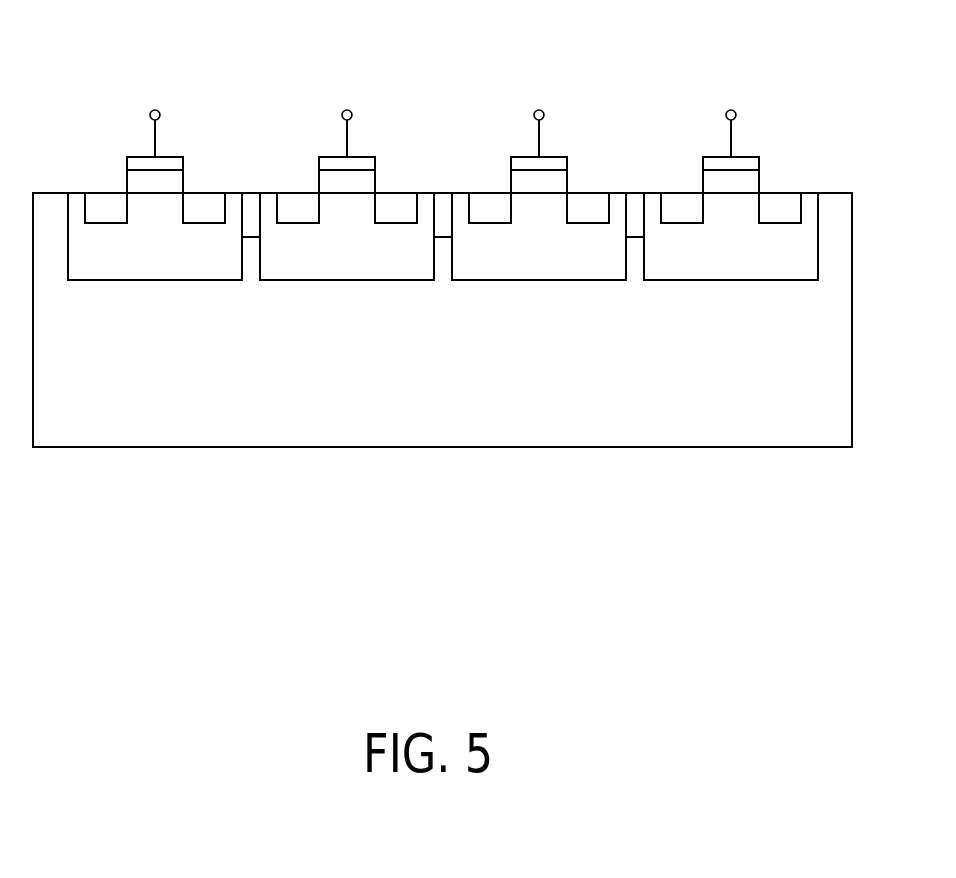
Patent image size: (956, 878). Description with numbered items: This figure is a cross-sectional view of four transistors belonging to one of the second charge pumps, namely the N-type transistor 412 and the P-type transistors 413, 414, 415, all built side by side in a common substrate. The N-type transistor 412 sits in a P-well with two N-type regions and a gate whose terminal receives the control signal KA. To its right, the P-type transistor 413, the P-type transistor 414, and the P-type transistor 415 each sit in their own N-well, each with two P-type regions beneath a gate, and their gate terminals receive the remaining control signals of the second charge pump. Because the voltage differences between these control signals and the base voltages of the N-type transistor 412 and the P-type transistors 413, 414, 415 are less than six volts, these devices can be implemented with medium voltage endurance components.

The N-type transistor 412 is at (68, 77).
The P-type transistor 413 is at (260, 77).
The P-type transistor 414 is at (452, 77).
The P-type transistor 415 is at (644, 77).